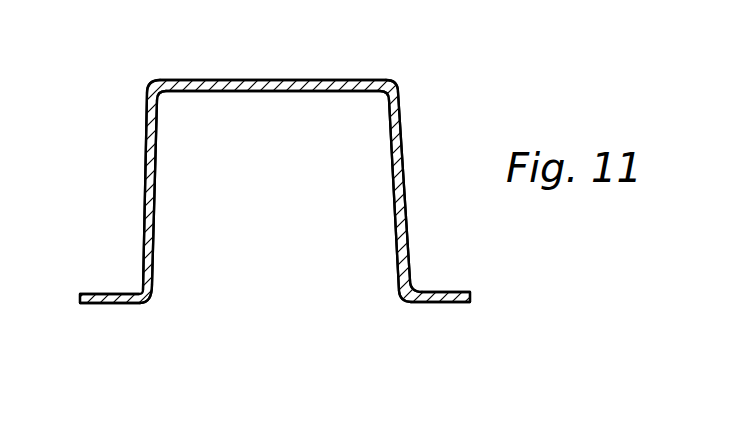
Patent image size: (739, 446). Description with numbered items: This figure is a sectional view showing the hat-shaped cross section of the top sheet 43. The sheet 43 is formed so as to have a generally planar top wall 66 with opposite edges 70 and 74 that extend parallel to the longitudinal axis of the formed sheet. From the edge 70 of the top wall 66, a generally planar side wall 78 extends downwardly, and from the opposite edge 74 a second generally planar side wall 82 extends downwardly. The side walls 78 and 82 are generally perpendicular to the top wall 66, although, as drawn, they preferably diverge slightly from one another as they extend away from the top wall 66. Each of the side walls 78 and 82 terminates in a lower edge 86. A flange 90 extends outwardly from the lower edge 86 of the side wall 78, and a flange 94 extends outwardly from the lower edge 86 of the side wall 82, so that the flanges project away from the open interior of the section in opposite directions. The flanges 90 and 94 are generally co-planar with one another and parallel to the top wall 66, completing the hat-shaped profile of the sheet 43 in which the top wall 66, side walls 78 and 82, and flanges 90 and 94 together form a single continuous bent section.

The top sheet 43 is at (420, 119).
The top wall 66 is at (286, 80).
The edge 70 is at (150, 78).
The opposite edge 74 is at (392, 82).
The side wall 78 is at (150, 144).
The side wall 82 is at (404, 199).
The lower edge 86 is at (140, 292).
The flange 90 is at (98, 305).
The flange 94 is at (436, 303).